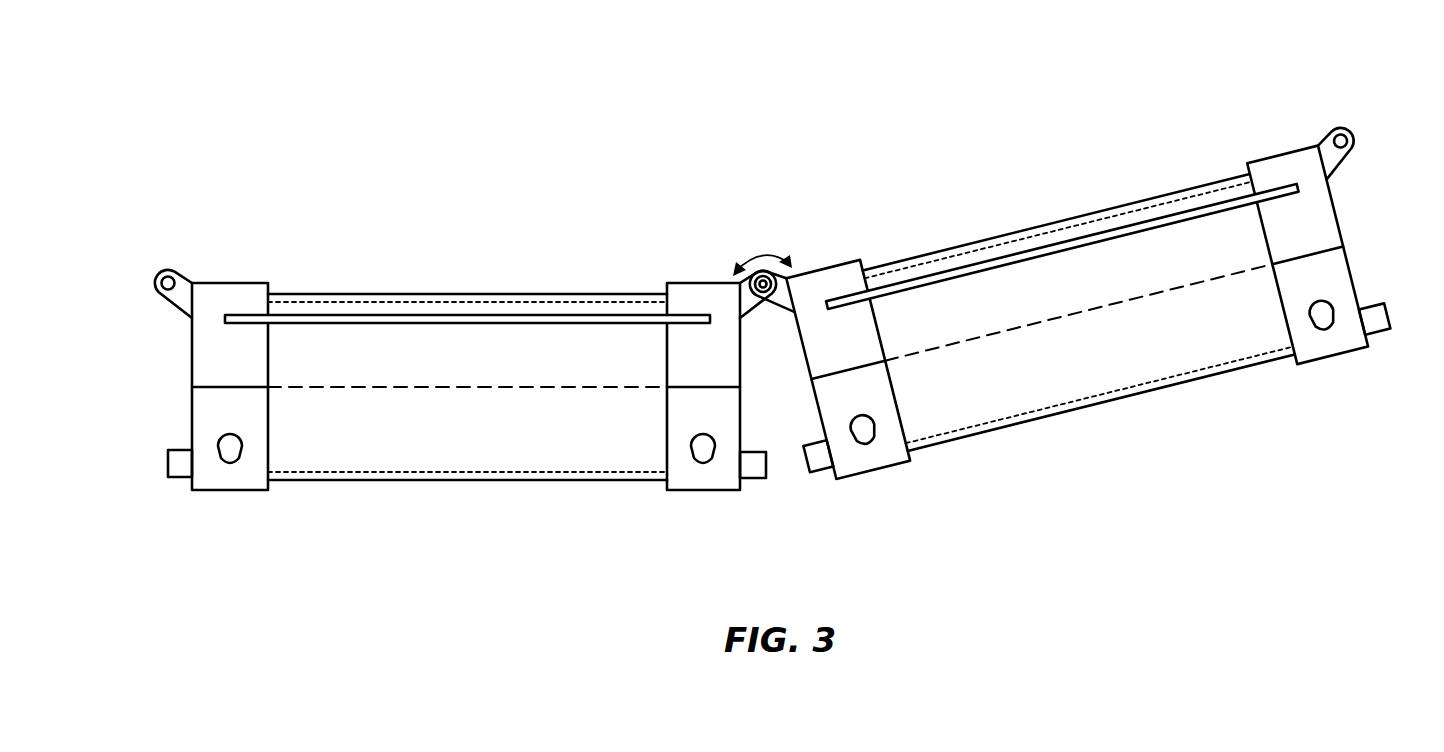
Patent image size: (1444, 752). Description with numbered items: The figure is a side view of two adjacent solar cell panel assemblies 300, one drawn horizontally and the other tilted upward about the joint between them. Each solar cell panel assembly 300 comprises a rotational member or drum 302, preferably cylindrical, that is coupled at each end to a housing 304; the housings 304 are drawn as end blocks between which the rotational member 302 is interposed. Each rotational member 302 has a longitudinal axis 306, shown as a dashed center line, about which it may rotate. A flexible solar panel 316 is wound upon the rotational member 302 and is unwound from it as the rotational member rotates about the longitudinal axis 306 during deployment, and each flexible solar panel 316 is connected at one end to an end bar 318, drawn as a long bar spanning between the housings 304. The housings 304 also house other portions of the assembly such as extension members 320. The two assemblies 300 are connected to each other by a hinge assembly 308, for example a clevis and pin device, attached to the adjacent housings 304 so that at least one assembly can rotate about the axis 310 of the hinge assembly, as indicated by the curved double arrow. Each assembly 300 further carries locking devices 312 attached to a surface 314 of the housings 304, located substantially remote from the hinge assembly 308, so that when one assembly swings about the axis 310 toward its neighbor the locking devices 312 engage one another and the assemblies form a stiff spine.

The solar cell panel assembly 300 is at (759, 317).
The rotational member 302 is at (553, 296).
The housing 304 is at (250, 287).
The longitudinal axis 306 is at (470, 388).
The hinge assembly 308 is at (815, 288).
The axis of the hinge assembly 310 is at (763, 280).
The locking device 312 is at (168, 462).
The surface 314 is at (190, 347).
The flexible solar panel 316 is at (355, 482).
The end bar 318 is at (420, 314).
The extension member 320 is at (228, 464).